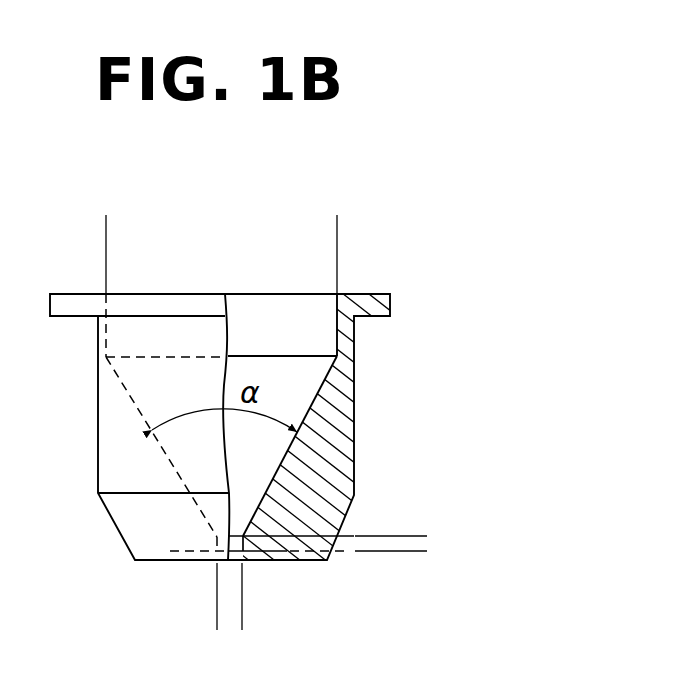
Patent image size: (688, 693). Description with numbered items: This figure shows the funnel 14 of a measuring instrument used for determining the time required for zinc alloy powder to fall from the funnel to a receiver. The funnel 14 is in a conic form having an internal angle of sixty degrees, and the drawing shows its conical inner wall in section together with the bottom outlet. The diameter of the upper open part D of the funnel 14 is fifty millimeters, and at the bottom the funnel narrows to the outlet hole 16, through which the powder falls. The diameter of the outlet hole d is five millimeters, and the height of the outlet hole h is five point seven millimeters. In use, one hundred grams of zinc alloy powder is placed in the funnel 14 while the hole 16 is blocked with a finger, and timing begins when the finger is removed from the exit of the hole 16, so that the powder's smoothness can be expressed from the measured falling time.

The funnel 14 is at (354, 384).
The hole 16 is at (253, 560).
The diameter of upper open part D is at (337, 224).
The diameter of outlet hole d is at (190, 618).
The height of outlet hole h is at (420, 510).